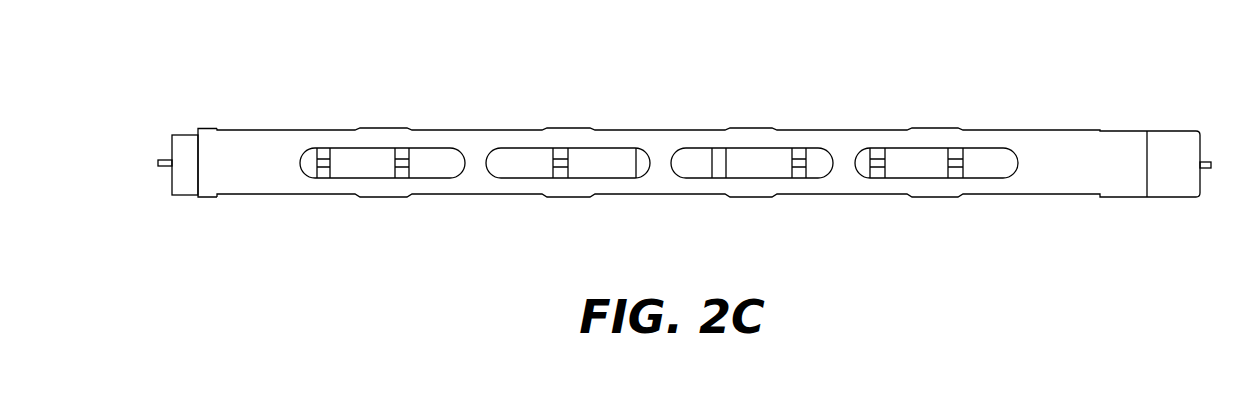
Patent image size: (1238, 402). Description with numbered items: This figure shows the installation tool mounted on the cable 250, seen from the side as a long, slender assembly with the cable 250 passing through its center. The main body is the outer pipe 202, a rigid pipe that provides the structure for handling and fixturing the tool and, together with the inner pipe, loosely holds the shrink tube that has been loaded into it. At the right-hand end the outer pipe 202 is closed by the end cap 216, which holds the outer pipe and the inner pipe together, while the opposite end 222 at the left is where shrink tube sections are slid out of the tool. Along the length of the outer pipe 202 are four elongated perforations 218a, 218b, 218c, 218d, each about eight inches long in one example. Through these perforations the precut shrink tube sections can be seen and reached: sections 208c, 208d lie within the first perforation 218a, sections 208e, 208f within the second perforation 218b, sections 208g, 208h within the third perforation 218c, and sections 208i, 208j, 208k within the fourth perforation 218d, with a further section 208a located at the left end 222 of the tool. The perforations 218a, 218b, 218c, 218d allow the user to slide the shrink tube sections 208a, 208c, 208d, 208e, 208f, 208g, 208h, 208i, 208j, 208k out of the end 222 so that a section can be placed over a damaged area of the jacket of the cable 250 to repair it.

The outer pipe 202 is at (262, 180).
The end cap 216 is at (1177, 175).
The end 222 is at (207, 132).
The cable 250 is at (163, 158).
The shrink tube section 208a is at (185, 183).
The shrink tube section 208c is at (345, 153).
The shrink tube section 208d is at (433, 172).
The shrink tube section 208e is at (515, 157).
The shrink tube section 208f is at (622, 172).
The shrink tube section 208g is at (692, 158).
The shrink tube section 208h is at (767, 167).
The shrink tube section 208i is at (862, 158).
The shrink tube section 208j is at (921, 172).
The shrink tube section 208k is at (997, 158).
The perforation 218a is at (450, 145).
The perforation 218b is at (528, 178).
The perforation 218c is at (698, 178).
The perforation 218d is at (927, 148).